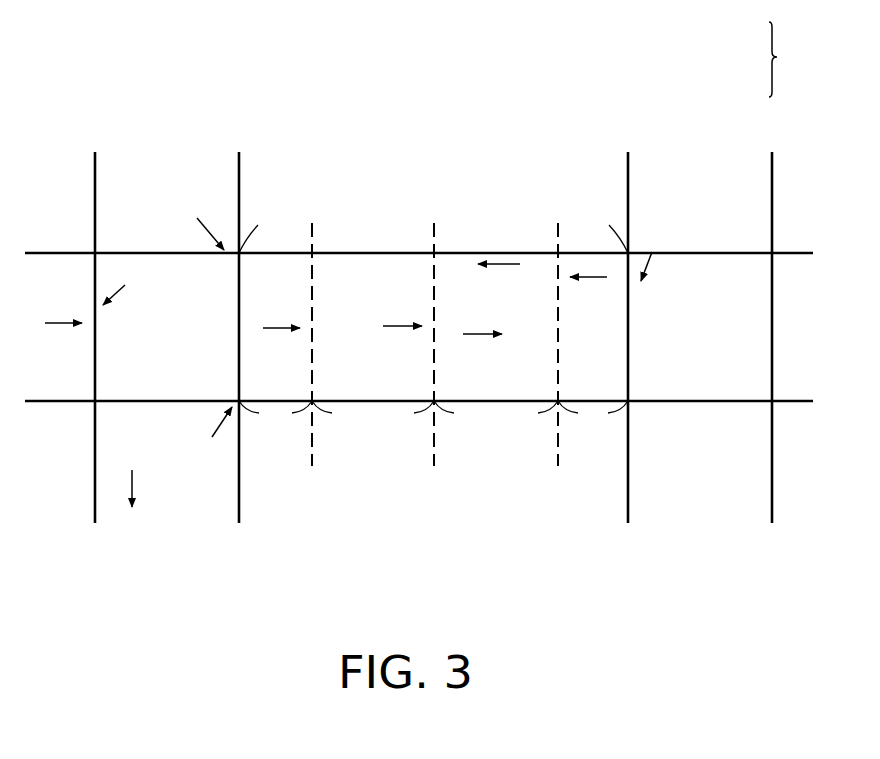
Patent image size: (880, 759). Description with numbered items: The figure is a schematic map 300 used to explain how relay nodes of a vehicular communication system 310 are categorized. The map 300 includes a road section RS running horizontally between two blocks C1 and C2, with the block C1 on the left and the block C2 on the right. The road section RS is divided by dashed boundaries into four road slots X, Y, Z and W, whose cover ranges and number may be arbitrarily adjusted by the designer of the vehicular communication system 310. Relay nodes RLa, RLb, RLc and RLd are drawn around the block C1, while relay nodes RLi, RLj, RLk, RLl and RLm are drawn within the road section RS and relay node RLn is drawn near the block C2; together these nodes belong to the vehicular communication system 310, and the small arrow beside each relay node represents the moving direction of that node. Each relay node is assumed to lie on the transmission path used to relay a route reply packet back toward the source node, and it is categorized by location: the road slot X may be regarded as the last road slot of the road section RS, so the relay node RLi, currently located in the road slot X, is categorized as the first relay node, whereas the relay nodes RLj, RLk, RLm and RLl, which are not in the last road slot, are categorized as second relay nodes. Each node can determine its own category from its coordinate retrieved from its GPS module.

The map 300 is at (773, 597).
The vehicular communication system 310 is at (741, 58).
The road section RS is at (434, 187).
The block C1 is at (165, 332).
The block C2 is at (695, 332).
The road slot X is at (280, 431).
The road slot Y is at (369, 431).
The road slot Z is at (503, 431).
The road slot W is at (593, 431).
The relay node RLa is at (190, 212).
The relay node RLb is at (58, 295).
The relay node RLc is at (168, 371).
The relay node RLd is at (132, 460).
The relay node RLi is at (277, 299).
The relay node RLj is at (396, 356).
The relay node RLk is at (503, 292).
The relay node RLl is at (593, 305).
The relay node RLm is at (477, 362).
The relay node RLn is at (665, 242).